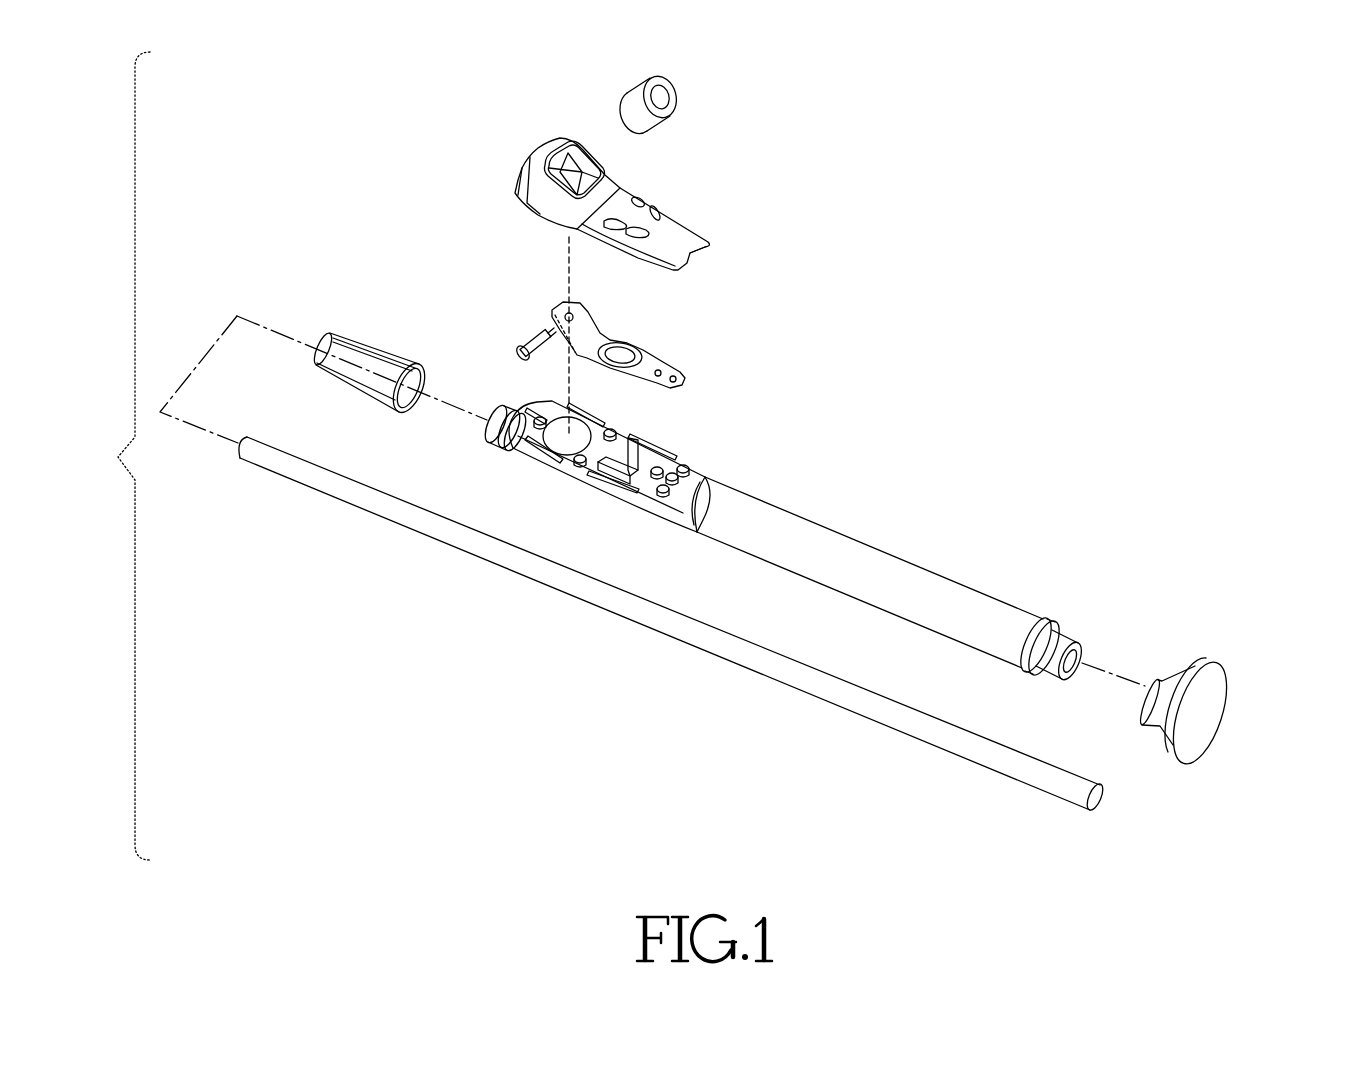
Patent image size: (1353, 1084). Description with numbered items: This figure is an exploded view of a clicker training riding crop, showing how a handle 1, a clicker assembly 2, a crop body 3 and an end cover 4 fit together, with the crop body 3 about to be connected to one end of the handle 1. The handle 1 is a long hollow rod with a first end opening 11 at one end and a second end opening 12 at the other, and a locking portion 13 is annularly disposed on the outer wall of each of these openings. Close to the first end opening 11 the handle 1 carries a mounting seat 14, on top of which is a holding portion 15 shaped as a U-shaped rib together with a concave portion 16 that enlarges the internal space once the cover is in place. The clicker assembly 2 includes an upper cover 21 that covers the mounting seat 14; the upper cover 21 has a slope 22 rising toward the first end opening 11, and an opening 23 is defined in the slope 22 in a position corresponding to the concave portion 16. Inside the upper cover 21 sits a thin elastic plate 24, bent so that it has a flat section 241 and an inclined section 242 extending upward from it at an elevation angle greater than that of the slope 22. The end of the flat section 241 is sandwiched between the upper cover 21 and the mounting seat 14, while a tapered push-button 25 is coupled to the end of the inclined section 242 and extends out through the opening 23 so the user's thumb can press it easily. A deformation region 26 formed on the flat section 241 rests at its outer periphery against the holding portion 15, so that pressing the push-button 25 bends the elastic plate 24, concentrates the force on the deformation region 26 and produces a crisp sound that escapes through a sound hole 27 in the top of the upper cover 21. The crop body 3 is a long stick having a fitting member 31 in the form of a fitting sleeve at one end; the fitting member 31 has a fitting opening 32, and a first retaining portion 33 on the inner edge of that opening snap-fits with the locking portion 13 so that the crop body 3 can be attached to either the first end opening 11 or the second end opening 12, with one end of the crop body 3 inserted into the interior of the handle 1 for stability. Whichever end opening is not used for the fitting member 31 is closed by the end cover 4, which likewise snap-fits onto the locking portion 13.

The handle 1 is at (817, 466).
The clicker assembly 2 is at (674, 213).
The crop body 3 is at (672, 507).
The end cover 4 is at (1220, 656).
The first end opening 11 is at (496, 410).
The second end opening 12 is at (1073, 646).
The locking portion 13 is at (510, 407).
The mounting seat 14 is at (622, 457).
The holding portion 15 is at (660, 447).
The concave portion 16 is at (580, 430).
The upper cover 21 is at (623, 203).
The slope 22 is at (548, 150).
The opening 23 is at (568, 177).
The elastic plate 24 is at (674, 323).
The push-button 25 is at (668, 78).
The deformation region 26 is at (640, 348).
The sound hole 27 is at (680, 222).
The fitting member 31 is at (378, 335).
The fitting opening 32 is at (410, 390).
The first retaining portion 33 is at (433, 367).
The flat section 241 is at (660, 370).
The inclined section 242 is at (585, 318).